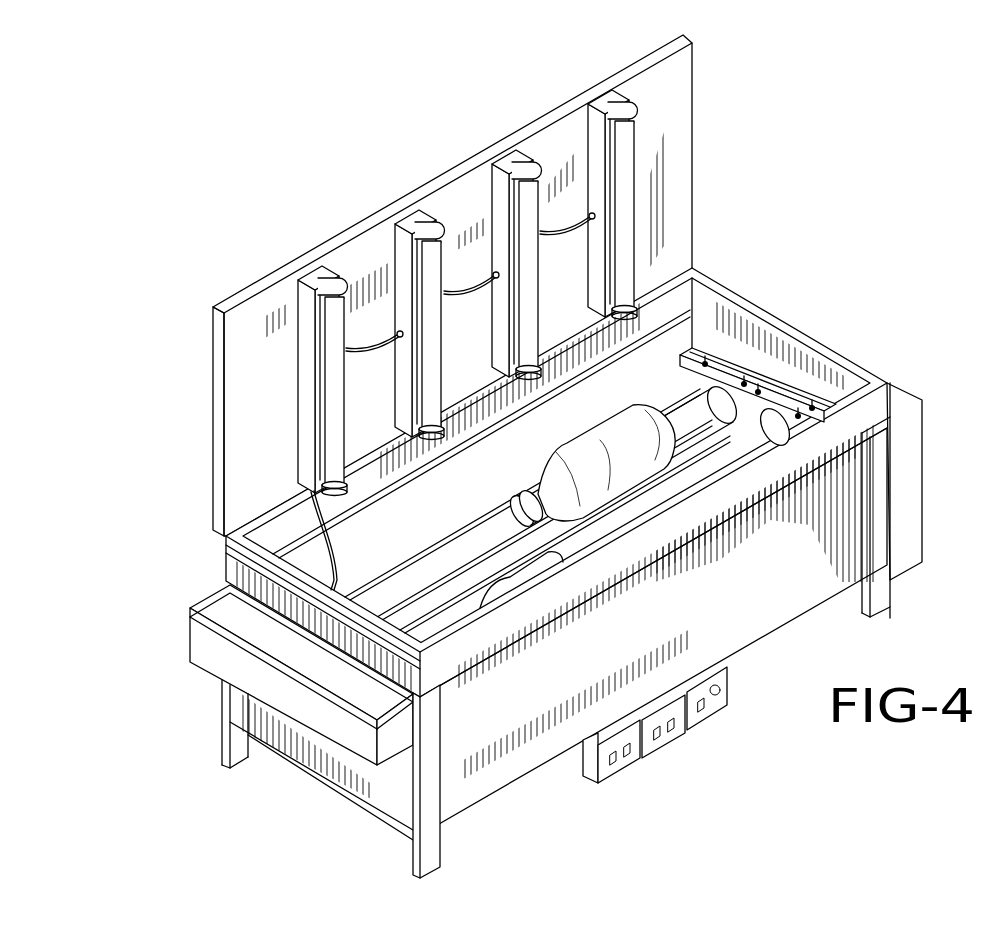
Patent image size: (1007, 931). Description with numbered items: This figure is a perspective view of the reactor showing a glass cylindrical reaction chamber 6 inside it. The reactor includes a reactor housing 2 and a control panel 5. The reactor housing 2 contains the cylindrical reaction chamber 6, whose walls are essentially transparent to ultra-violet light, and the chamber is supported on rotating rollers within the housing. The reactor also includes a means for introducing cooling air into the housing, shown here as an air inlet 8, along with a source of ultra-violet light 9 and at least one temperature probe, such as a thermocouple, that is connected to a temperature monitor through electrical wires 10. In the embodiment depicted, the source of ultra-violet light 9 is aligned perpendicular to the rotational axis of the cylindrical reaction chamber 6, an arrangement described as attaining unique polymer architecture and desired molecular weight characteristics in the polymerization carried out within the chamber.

The reactor housing 2 is at (517, 762).
The control panel 5 is at (653, 745).
The cylindrical reaction chamber 6 is at (630, 449).
The air inlet 8 is at (766, 374).
The source of ultra-violet light 9 is at (332, 397).
The electrical wires 10 is at (462, 287).